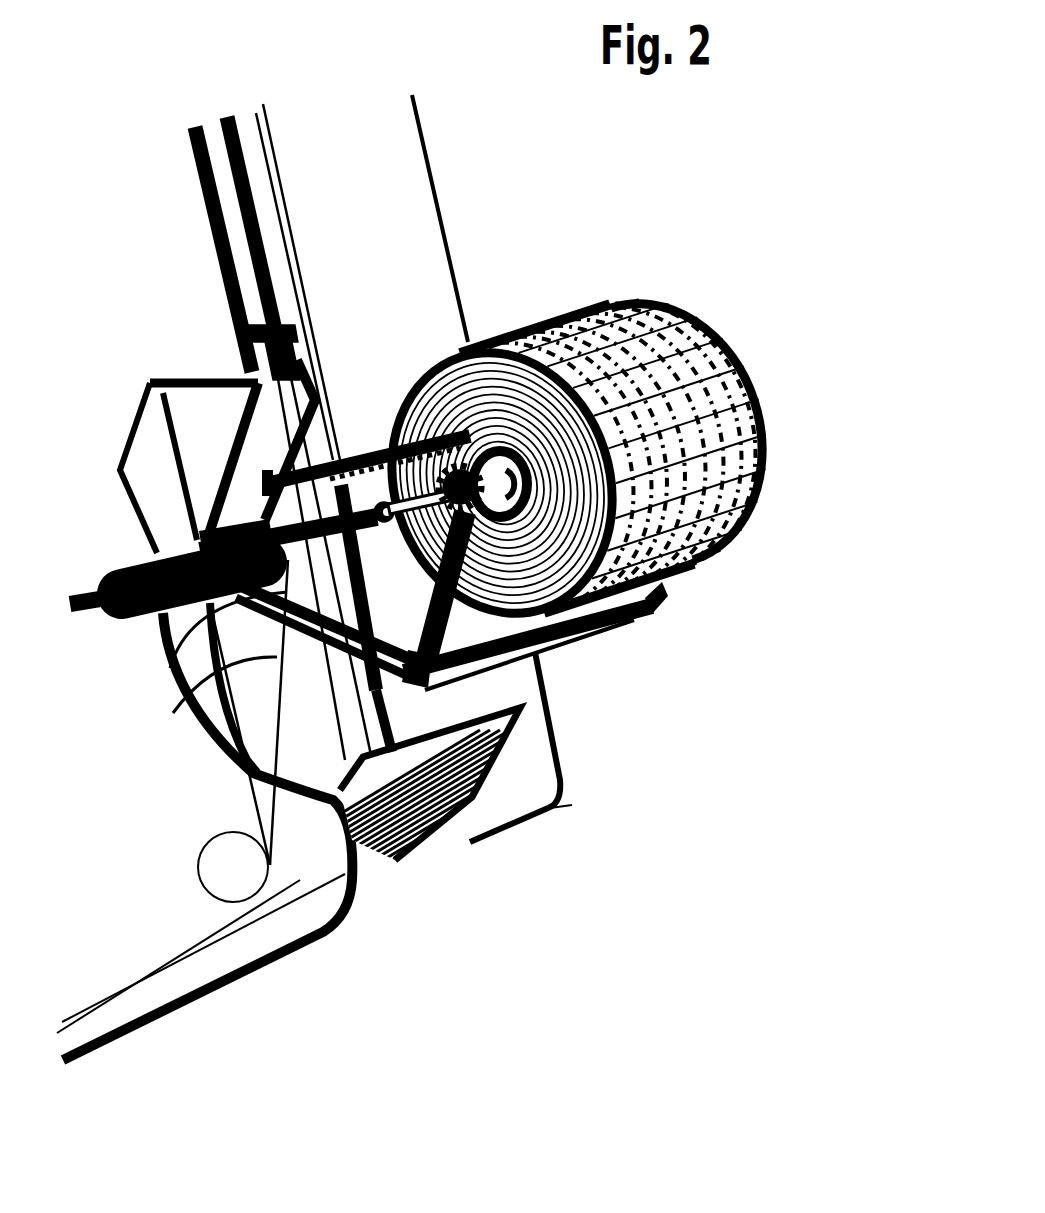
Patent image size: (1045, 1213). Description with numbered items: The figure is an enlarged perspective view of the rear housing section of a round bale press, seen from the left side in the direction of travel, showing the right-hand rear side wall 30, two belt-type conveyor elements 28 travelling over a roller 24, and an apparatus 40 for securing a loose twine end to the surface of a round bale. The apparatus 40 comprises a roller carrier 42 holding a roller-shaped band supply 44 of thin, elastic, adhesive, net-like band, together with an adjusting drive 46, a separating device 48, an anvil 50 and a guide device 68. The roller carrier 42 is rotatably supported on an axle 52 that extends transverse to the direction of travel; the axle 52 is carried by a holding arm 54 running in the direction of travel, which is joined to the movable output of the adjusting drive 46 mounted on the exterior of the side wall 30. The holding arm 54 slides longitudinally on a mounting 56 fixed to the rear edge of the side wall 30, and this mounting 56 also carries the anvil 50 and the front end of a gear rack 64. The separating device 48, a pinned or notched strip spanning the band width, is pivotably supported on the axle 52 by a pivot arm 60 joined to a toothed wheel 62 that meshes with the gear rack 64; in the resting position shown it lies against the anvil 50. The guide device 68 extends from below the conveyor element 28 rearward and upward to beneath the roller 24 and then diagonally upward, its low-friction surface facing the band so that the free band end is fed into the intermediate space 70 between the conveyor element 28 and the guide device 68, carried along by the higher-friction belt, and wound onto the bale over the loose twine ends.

The roller 24 is at (222, 863).
The conveyor element 28 is at (273, 730).
The side wall 30 is at (158, 767).
The apparatus 40 is at (615, 435).
The roller carrier 42 is at (500, 440).
The band supply 44 is at (752, 415).
The adjusting drive 46 is at (140, 550).
The separating device 48 is at (425, 650).
The anvil 50 is at (583, 635).
The axle 52 is at (494, 440).
The holding arm 54 is at (225, 630).
The mounting 56 is at (230, 450).
The pivot arm 60 is at (507, 657).
The toothed wheel 62 is at (667, 577).
The gear rack 64 is at (370, 430).
The guide device 68 is at (470, 797).
The intermediate space 70 is at (292, 838).